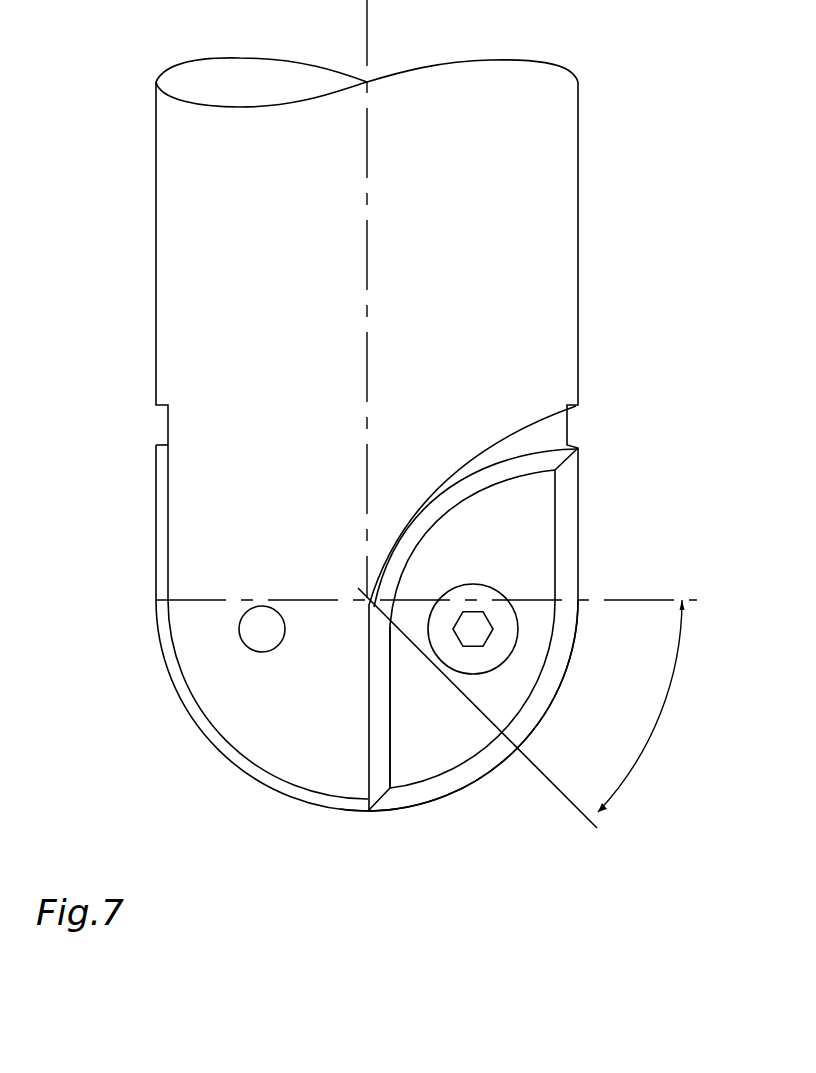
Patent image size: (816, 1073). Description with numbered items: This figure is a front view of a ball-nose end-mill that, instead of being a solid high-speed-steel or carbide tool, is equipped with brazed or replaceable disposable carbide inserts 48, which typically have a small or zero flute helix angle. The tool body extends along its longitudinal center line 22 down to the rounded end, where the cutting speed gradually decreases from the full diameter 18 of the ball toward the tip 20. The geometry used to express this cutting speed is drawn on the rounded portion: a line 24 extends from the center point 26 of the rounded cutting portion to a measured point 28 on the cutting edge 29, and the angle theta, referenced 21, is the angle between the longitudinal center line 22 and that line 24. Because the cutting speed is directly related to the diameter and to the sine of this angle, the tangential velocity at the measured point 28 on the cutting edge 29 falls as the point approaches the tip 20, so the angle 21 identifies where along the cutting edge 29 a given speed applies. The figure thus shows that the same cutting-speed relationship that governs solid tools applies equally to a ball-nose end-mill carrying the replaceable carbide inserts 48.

The full diameter 18 is at (580, 468).
The tip 20 is at (369, 811).
The angle theta 21 is at (660, 720).
The longitudinal center line 22 is at (367, 195).
The line 24 is at (472, 700).
The center point 26 is at (372, 600).
The measured point 28 is at (523, 745).
The cutting edge 29 is at (477, 787).
The replaceable disposable carbide inserts 48 is at (543, 590).